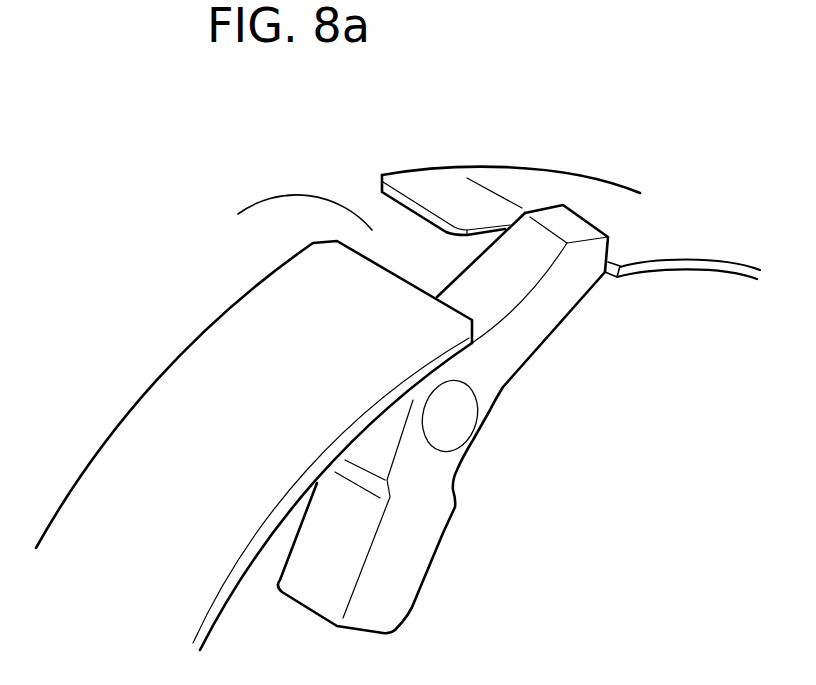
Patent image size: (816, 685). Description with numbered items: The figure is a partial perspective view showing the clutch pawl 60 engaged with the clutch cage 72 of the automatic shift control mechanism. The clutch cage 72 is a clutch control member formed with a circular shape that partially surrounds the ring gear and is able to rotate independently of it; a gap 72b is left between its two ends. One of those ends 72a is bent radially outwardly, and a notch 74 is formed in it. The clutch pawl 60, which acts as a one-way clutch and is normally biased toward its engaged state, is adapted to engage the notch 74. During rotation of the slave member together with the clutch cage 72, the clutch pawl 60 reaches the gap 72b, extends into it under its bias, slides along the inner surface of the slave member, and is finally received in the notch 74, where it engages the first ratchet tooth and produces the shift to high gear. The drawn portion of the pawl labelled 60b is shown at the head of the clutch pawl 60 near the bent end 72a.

The clutch pawl 60 is at (460, 347).
The head portion of clip 60b is at (567, 228).
The clutch cage 72 is at (232, 469).
The end of clutch cage 72a is at (440, 192).
The gap 72b is at (277, 212).
The notch 74 is at (618, 258).